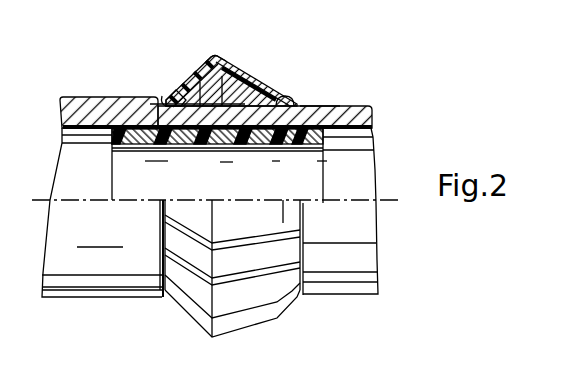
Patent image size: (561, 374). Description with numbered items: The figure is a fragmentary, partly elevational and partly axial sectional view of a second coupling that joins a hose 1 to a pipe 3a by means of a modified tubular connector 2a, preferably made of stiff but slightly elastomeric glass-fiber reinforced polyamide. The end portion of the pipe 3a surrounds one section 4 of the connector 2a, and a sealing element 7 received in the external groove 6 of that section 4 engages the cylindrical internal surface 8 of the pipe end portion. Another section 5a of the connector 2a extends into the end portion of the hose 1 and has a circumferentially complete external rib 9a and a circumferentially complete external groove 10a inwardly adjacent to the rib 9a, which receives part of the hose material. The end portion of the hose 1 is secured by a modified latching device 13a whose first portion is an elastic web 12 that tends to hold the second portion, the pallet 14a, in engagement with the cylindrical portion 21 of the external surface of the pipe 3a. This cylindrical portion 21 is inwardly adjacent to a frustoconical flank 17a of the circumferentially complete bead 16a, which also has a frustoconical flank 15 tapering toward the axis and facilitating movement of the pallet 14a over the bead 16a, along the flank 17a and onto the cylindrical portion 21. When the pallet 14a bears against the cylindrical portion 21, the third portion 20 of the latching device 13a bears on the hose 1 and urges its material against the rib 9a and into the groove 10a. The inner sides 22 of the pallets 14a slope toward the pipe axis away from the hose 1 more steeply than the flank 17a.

The hose 1 is at (351, 107).
The tubular connector 2a is at (207, 150).
The pipe 3a is at (82, 94).
The section of the connector 4 is at (137, 149).
The section of the connector 5a is at (257, 150).
The external groove 6 is at (113, 135).
The sealing element 7 is at (140, 134).
The cylindrical internal surface 8 is at (63, 132).
The external rib 9a is at (318, 105).
The external groove 10a is at (297, 150).
The web 12 is at (258, 81).
The latching device 13a is at (238, 58).
The pallet 14a is at (192, 89).
The frustoconical flank 15 is at (244, 88).
The bead 16a is at (218, 58).
The frustoconical flank 17a is at (178, 83).
The third portion of the latching device 20 is at (292, 97).
The cylindrical portion 21 is at (167, 100).
The inner sides of the pallets 22 is at (190, 152).